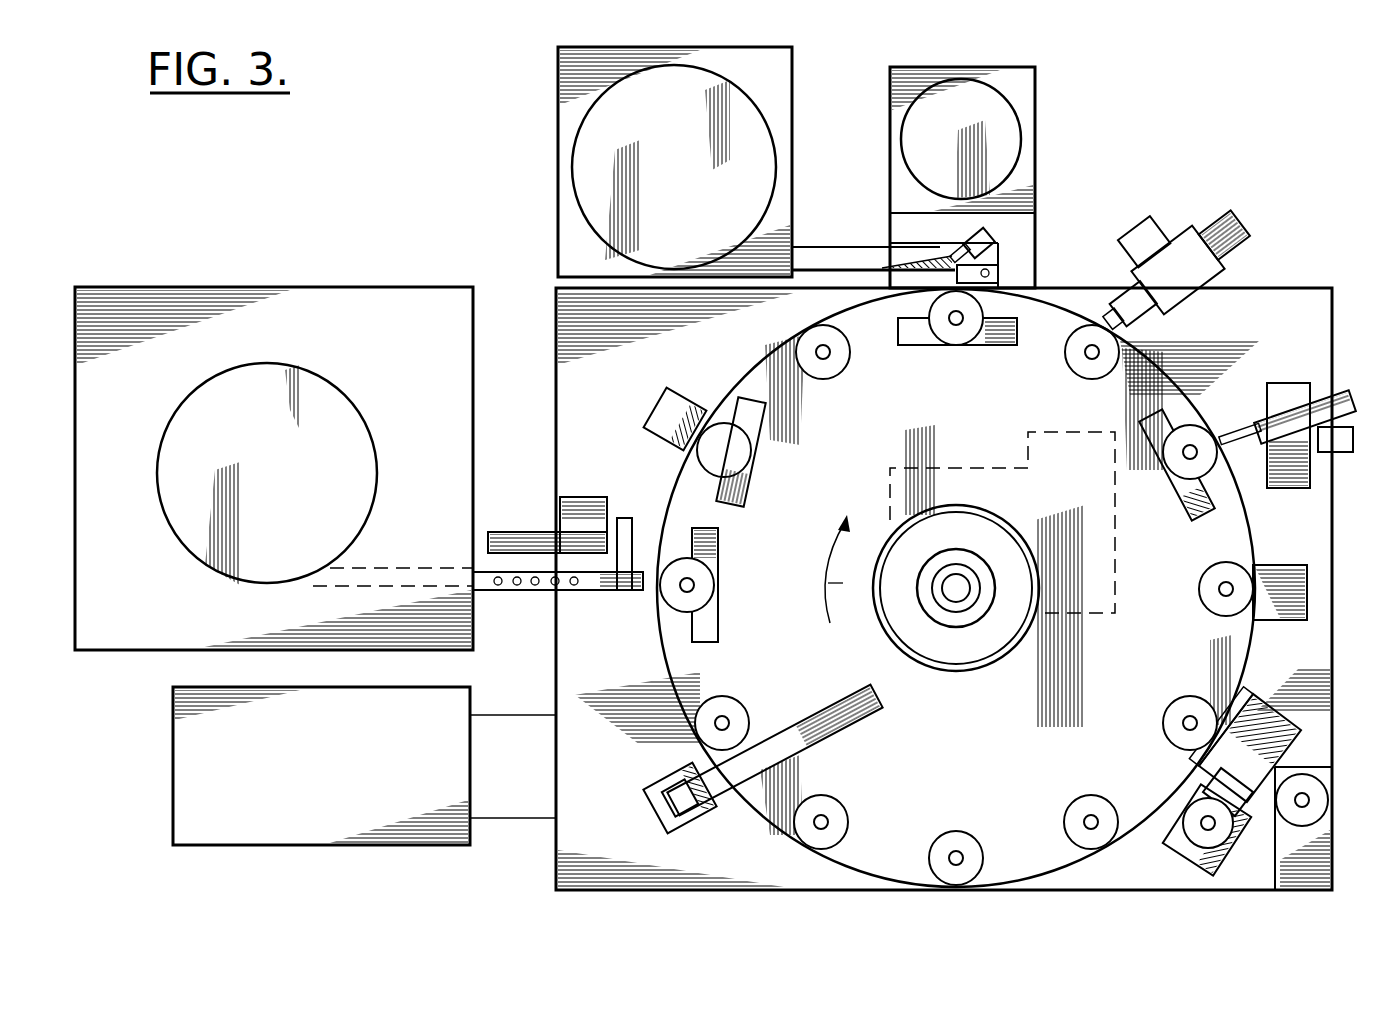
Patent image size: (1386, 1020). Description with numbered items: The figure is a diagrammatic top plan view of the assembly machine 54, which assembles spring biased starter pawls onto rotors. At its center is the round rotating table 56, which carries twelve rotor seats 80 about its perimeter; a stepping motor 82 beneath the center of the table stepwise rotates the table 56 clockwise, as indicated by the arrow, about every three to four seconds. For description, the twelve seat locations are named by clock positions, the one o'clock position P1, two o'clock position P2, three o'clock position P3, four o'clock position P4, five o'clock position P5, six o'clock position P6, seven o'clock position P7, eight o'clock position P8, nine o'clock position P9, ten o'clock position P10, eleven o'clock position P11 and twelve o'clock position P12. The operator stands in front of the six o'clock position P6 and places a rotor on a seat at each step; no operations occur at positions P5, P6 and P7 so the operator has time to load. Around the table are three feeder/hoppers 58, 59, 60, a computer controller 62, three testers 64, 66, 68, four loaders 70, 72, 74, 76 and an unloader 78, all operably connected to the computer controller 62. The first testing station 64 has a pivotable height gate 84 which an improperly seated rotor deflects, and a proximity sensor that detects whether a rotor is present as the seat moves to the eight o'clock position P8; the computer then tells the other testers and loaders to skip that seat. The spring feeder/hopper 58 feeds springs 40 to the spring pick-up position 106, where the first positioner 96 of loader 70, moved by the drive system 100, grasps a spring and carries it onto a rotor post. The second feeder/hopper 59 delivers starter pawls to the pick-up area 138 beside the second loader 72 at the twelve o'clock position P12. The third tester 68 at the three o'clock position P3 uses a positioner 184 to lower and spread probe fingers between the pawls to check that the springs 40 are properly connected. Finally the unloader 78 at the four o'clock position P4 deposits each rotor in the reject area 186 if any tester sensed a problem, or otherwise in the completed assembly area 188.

The assembly machine 54 is at (1236, 137).
The rotating table 56 is at (974, 707).
The spring feeder/hopper 58 is at (277, 468).
The second feeder/hopper 59 is at (683, 168).
The feeder/hopper 60 is at (923, 135).
The computer controller 62 is at (173, 725).
The first testing station 64 is at (640, 815).
The second tester 66 is at (652, 386).
The third tester 68 is at (1314, 597).
The first loader 70 is at (555, 534).
The second loader 72 is at (1018, 264).
The loader 74 is at (1246, 266).
The loader 76 is at (1293, 372).
The unloader 78 is at (1234, 783).
The rotor seats 80 is at (783, 833).
The stepping motor 82 is at (950, 466).
The height gate 84 is at (862, 710).
The first positioner 96 is at (575, 497).
The drive system 100 is at (572, 517).
The spring pick-up position 106 is at (612, 592).
The starter pawl pick-up area 138 is at (918, 252).
The positioner 184 is at (1280, 621).
The reject area 186 is at (1172, 850).
The completed assembly area 188 is at (1332, 872).
The springs 40 is at (498, 591).
The one o'clock position P1 is at (1082, 366).
The two o'clock position P2 is at (1176, 465).
The three o'clock position P3 is at (1198, 589).
The four o'clock position P4 is at (1175, 710).
The five o'clock position P5 is at (1085, 806).
The six o'clock position P6 is at (962, 833).
The seven o'clock position P7 is at (835, 806).
The eight o'clock position P8 is at (737, 706).
The nine o'clock position P9 is at (715, 584).
The ten o'clock position P10 is at (743, 462).
The eleven o'clock position P11 is at (836, 367).
The twelve o'clock position P12 is at (958, 346).